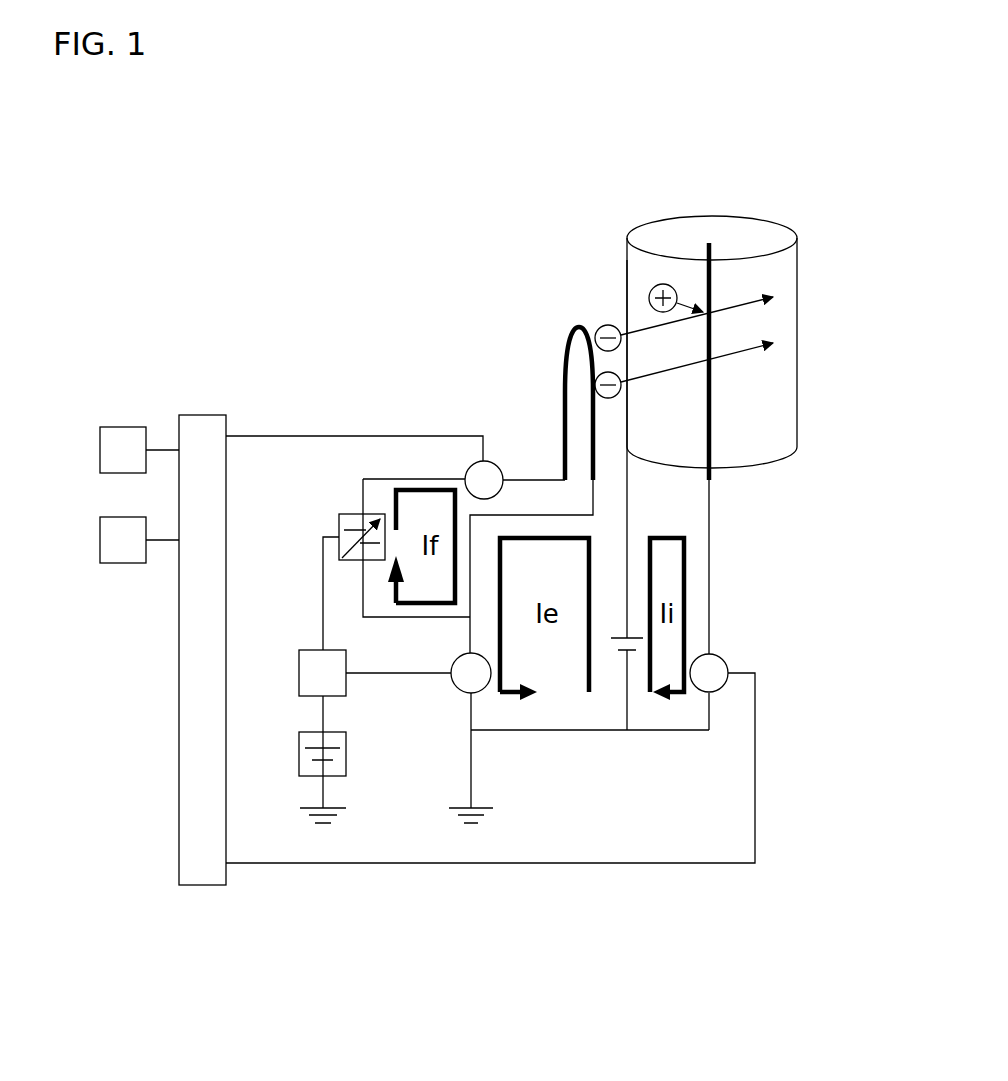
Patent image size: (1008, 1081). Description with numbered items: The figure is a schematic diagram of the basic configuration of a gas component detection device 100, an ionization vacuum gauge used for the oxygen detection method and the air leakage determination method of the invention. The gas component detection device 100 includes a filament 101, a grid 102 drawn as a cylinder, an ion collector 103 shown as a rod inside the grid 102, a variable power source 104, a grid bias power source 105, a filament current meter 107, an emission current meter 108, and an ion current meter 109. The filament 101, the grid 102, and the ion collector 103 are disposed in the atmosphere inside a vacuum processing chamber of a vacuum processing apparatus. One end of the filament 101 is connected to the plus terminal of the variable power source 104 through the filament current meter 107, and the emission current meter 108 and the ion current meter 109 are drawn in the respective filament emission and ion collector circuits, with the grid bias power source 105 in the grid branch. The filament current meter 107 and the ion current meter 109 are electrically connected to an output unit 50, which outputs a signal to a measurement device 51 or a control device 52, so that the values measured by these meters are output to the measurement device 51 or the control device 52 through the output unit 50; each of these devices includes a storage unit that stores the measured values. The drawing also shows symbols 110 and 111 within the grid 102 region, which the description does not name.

The output unit 50 is at (203, 413).
The measurement device 51 is at (100, 450).
The control device 52 is at (100, 540).
The gas component detection device 100 is at (747, 175).
The filament 101 is at (565, 385).
The grid 102 is at (668, 216).
The ion collector 103 is at (712, 402).
The variable power source 104 is at (363, 514).
The grid bias power source 105 is at (623, 652).
The filament current meter 107 is at (497, 466).
The emission current meter 108 is at (458, 688).
The ion current meter 109 is at (723, 658).
The electrons 110 is at (600, 326).
The ion 111 is at (652, 290).